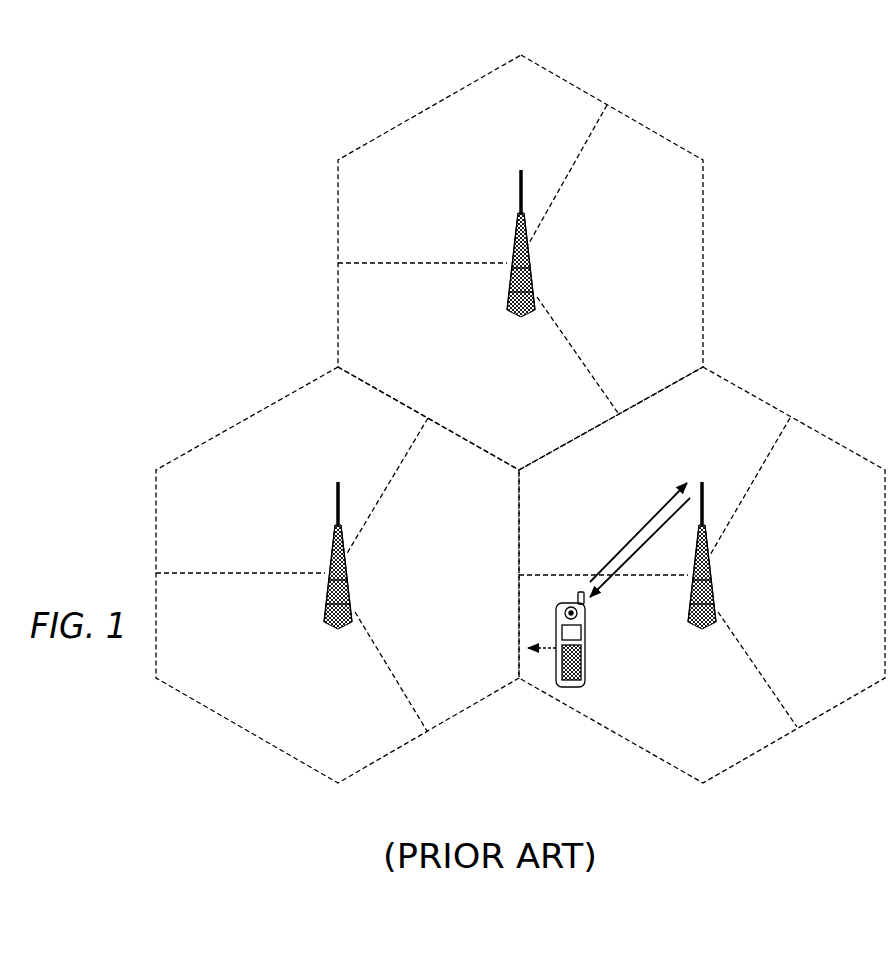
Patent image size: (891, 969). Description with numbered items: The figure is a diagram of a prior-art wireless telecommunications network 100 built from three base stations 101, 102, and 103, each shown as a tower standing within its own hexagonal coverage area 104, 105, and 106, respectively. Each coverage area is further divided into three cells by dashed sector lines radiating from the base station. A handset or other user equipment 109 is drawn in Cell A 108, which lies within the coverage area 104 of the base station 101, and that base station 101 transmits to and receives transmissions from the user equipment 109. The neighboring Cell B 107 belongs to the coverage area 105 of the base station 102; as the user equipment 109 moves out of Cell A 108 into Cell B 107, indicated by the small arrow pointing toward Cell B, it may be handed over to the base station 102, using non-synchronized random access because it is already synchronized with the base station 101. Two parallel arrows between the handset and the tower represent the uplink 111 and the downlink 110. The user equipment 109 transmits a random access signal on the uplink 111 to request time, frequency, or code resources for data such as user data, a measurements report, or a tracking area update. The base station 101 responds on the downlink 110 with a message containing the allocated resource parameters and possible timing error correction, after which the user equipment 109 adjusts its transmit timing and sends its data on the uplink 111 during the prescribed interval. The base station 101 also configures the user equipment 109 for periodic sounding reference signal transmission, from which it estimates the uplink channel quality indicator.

The wireless telecommunications network 100 is at (663, 80).
The base station 101 is at (712, 592).
The base station 102 is at (334, 543).
The base station 103 is at (517, 228).
The coverage area 104 is at (801, 728).
The coverage area 105 is at (232, 725).
The coverage area 106 is at (704, 242).
The Cell B 107 is at (475, 678).
The Cell A 108 is at (705, 741).
The user equipment 109 is at (588, 651).
The downlink 110 is at (626, 582).
The uplink 111 is at (647, 519).